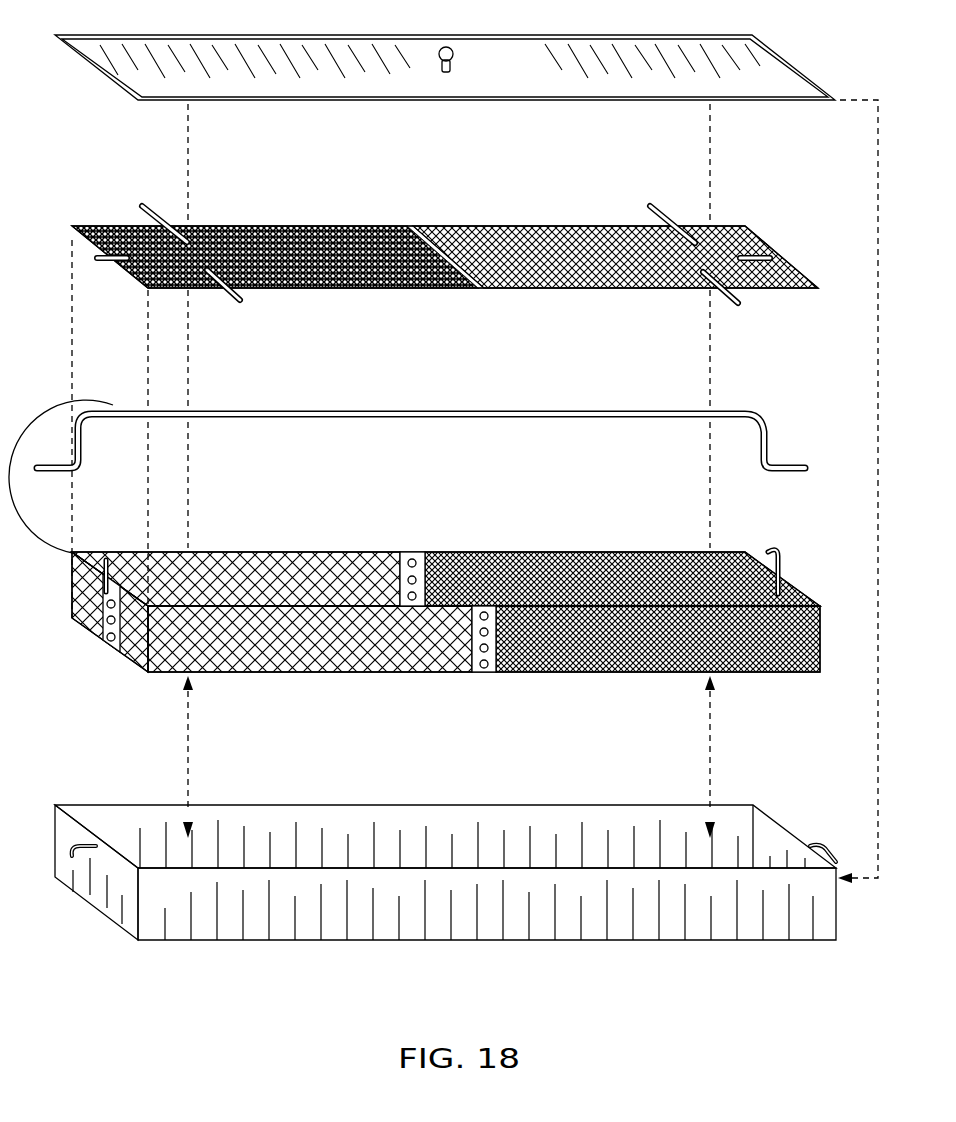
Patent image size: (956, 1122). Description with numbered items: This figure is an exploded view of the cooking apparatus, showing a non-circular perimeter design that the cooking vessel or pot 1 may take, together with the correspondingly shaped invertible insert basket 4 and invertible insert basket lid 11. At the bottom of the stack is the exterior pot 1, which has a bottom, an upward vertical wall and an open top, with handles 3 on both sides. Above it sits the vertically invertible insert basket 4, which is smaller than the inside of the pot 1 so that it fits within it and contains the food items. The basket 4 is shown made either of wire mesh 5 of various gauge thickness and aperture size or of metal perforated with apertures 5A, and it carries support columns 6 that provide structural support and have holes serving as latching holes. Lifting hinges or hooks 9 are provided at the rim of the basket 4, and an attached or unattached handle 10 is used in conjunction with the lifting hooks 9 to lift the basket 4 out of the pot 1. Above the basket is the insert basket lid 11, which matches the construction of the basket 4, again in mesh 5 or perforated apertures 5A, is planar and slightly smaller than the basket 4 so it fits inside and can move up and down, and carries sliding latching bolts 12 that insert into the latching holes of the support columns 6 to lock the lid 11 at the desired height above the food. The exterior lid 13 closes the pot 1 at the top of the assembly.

The cooking vessel or pot 1 is at (104, 910).
The handles 3 is at (70, 842).
The insert basket 4 is at (350, 548).
The mesh 5 is at (555, 238).
The apertures 5A is at (272, 210).
The support columns 6 is at (104, 626).
The lifting hinges or hooks 9 is at (100, 552).
The handle 10 is at (575, 411).
The insert basket lid 11 is at (472, 226).
The sliding latching bolts 12 is at (142, 206).
The exterior lid 13 is at (134, 35).